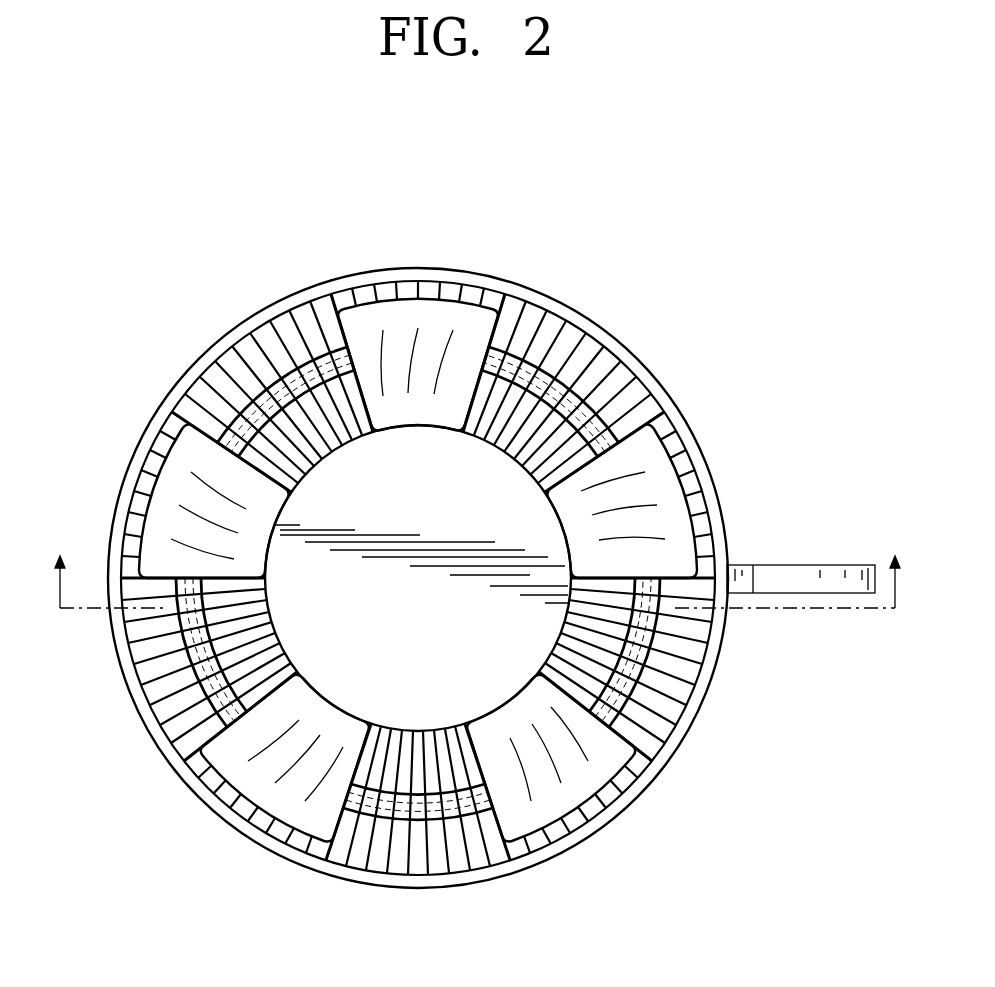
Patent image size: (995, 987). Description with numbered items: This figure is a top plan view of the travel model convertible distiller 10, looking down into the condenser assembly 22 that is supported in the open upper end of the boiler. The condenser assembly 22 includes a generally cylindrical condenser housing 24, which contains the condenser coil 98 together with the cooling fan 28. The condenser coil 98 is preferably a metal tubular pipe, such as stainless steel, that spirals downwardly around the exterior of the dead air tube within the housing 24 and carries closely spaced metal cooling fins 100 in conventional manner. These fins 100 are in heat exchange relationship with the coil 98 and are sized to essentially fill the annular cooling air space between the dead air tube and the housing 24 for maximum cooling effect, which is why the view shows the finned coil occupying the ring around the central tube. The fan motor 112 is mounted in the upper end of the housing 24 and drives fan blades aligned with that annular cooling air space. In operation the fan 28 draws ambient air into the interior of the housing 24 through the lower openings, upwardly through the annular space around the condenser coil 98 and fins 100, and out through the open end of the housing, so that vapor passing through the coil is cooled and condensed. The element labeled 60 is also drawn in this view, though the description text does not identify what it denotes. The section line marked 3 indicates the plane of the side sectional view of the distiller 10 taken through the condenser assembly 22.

The travel model convertible distiller 10 is at (174, 274).
The condenser assembly 22 is at (688, 753).
The condenser housing 24 is at (647, 377).
The cooling fan 28 is at (540, 576).
The permanent magnet 60 is at (665, 497).
The condenser coil 98 is at (600, 350).
The cooling fins 100 is at (513, 332).
The fan motor 112 is at (357, 687).
The section line 3- 3 is at (477, 592).